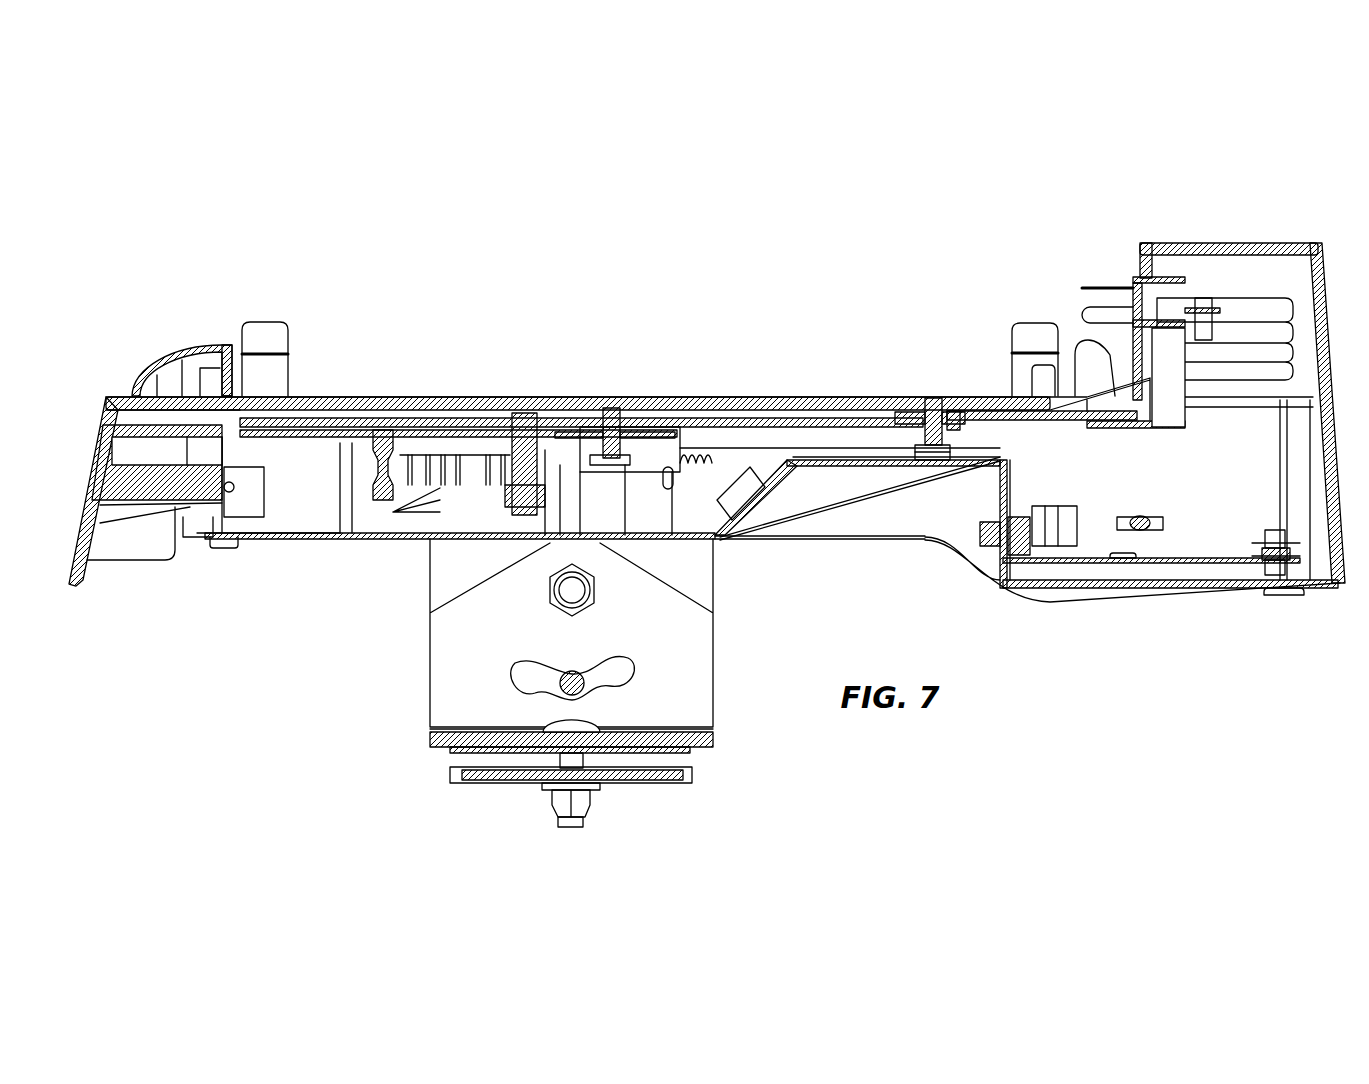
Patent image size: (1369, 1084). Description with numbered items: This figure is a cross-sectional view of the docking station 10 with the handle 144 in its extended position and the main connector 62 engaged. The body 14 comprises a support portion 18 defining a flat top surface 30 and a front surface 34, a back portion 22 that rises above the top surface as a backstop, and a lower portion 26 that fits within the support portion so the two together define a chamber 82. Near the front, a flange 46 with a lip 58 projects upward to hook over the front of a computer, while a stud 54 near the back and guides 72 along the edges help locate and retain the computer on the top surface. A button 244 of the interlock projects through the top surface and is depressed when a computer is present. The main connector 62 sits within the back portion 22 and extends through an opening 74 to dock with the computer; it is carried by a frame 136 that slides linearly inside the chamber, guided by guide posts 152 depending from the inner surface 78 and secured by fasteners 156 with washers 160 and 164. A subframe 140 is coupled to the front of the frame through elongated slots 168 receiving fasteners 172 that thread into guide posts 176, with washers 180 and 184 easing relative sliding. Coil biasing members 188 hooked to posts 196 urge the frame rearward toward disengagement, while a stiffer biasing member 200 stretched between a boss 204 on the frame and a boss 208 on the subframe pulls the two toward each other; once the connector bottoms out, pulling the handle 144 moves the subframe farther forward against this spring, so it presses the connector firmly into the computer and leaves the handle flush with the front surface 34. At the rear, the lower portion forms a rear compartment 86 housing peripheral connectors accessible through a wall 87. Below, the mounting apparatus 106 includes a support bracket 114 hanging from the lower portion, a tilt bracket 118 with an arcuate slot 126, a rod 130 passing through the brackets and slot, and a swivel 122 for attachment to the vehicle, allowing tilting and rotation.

The docking station 10 is at (775, 229).
The body 14 is at (803, 397).
The support portion 18 is at (752, 398).
The back portion 22 is at (1250, 243).
The lower portion 26 is at (1205, 588).
The top surface 30 is at (343, 397).
The front surface 34 is at (104, 395).
The flange 46 is at (215, 345).
The stud 54 is at (1092, 358).
The lip 58 is at (242, 340).
The main connector 62 is at (1160, 284).
The guides 72 is at (268, 330).
The opening 74 is at (1143, 280).
The inner surface 78 is at (318, 420).
The chamber 82 is at (818, 450).
The rear compartment 86 is at (1181, 530).
The wall 87 is at (1000, 568).
The mounting apparatus 106 is at (393, 663).
The support bracket 114 is at (703, 575).
The tilt bracket 118 is at (703, 665).
The swivel 122 is at (690, 777).
The arcuate slot 126 is at (513, 660).
The rod 130 is at (585, 688).
The frame 136 is at (683, 430).
The subframe 140 is at (317, 437).
The handle 144 is at (96, 478).
The guide post 152 is at (921, 398).
The fastener 156 is at (933, 447).
The washer 160 is at (907, 442).
The washer 164 is at (960, 400).
The elongated slot 168 is at (590, 420).
The fastener 172 is at (605, 415).
The guide post 176 is at (617, 462).
The washer 180 is at (553, 545).
The washer 184 is at (630, 415).
The biasing member 188 is at (684, 490).
The post 196 is at (718, 450).
The biasing member 200 is at (455, 530).
The boss 204 is at (520, 412).
The boss 208 is at (380, 430).
The button 244 is at (1038, 375).